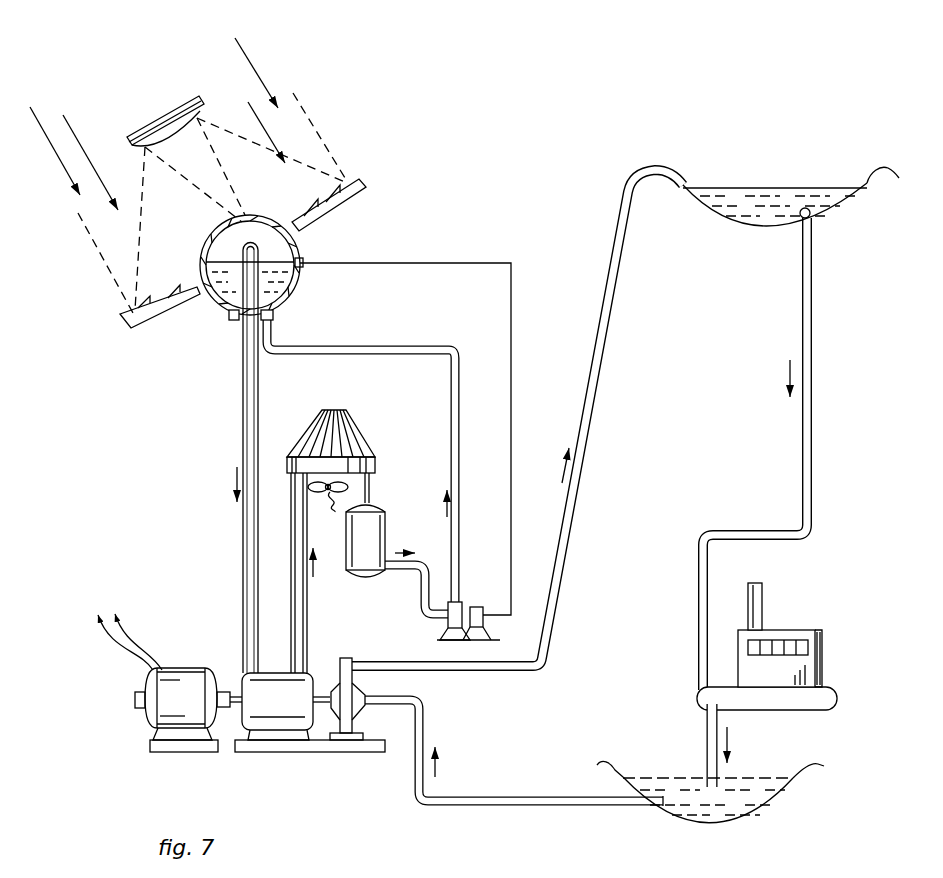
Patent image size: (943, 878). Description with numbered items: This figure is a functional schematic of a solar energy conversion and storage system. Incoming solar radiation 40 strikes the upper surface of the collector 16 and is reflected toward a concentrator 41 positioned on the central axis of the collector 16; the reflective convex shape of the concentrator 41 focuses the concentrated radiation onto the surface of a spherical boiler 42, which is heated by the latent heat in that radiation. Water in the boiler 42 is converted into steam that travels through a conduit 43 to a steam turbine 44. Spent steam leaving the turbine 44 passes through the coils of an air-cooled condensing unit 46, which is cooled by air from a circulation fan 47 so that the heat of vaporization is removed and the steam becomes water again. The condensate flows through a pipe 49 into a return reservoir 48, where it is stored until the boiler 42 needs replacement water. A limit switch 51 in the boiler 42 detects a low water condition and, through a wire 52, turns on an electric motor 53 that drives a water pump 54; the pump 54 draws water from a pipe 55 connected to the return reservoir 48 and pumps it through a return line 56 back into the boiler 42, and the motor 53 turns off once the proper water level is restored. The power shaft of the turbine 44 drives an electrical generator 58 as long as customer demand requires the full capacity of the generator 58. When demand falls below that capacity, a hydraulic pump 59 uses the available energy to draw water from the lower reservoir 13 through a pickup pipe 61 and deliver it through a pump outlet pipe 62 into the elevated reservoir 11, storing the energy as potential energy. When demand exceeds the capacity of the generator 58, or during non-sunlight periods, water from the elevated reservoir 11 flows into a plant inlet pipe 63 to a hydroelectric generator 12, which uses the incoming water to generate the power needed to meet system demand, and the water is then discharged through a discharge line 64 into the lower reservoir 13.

The elevated reservoir 11 is at (760, 187).
The hydroelectric generator 12 is at (790, 631).
The lower reservoir 13 is at (757, 785).
The collector 16 is at (355, 181).
The incoming solar radiation 40 is at (246, 61).
The concentrator 41 is at (202, 100).
The spherical boiler 42 is at (258, 215).
The conduit 43 is at (246, 414).
The steam turbine 44 is at (318, 672).
The air-cooled condensing unit 46 is at (352, 421).
The circulation fan 47 is at (328, 505).
The return reservoir 48 is at (386, 544).
The pipe 49 is at (371, 493).
The limit switch 51 is at (303, 262).
The wire 52 is at (500, 263).
The electric motor 53 is at (481, 607).
The water pump 54 is at (456, 601).
The pipe 55 is at (410, 570).
The return line 56 is at (456, 418).
The electrical generator 58 is at (180, 668).
The hydraulic pump 59 is at (358, 687).
The pickup pipe 61 is at (545, 797).
The pump outlet pipe 62 is at (513, 669).
The plant inlet pipe 63 is at (737, 530).
The discharge line 64 is at (707, 745).